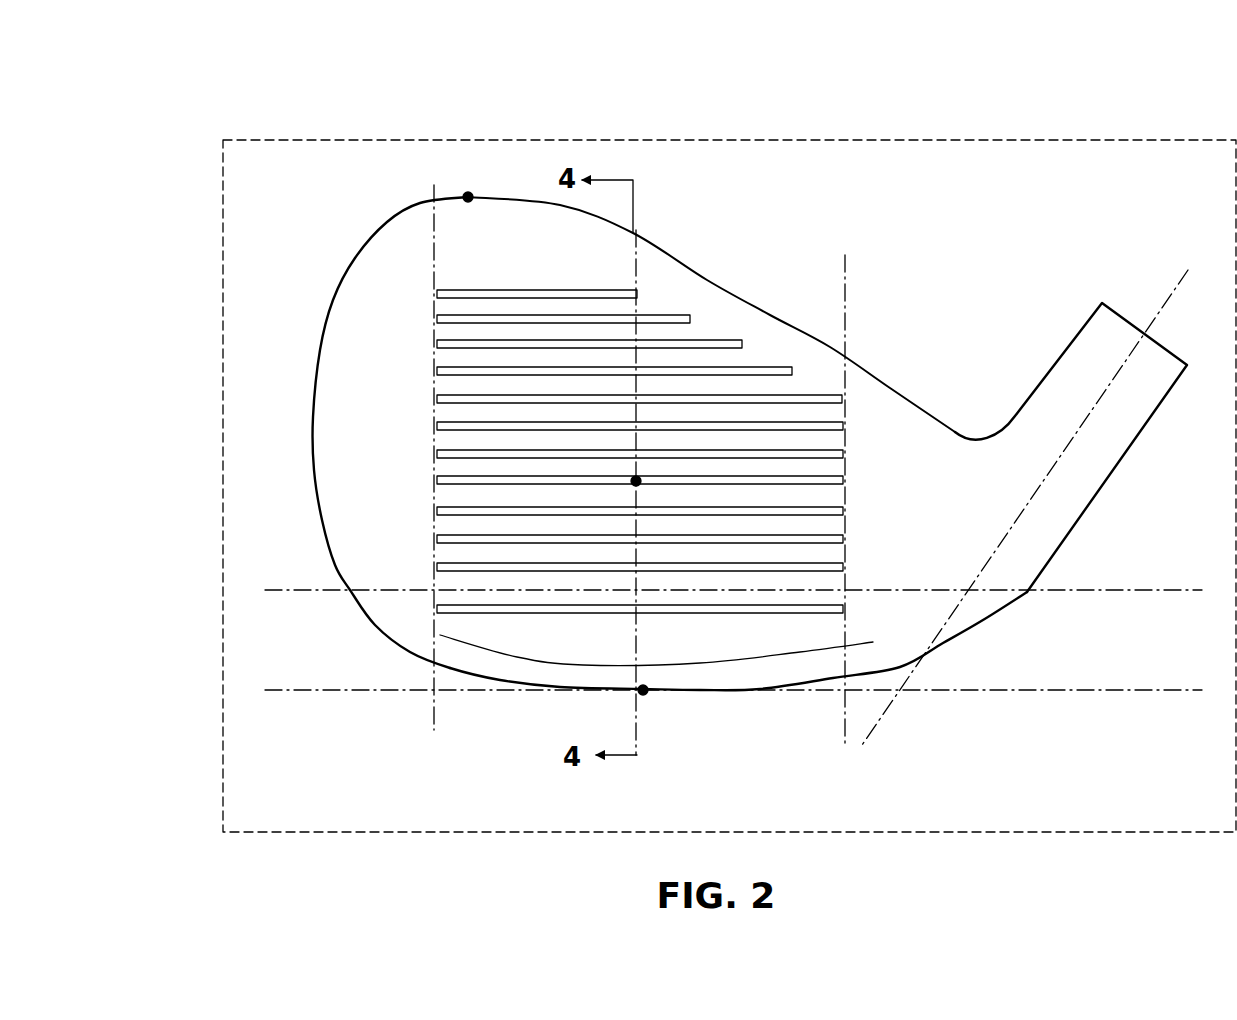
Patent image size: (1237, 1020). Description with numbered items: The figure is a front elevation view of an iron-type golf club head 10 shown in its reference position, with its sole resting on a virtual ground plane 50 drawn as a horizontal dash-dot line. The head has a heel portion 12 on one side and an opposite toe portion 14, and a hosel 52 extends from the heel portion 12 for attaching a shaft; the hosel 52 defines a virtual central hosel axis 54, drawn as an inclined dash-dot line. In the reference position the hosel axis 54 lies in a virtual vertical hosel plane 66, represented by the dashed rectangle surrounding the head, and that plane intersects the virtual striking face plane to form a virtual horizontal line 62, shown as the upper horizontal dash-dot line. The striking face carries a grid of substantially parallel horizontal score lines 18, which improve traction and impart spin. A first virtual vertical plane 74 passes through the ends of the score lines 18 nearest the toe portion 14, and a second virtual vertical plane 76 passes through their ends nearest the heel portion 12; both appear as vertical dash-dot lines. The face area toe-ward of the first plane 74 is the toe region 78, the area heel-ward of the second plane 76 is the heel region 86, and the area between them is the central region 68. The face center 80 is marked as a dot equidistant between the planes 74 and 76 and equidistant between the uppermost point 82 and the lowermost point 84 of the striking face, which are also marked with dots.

The golf club head 10 is at (470, 110).
The heel portion 12 is at (1046, 641).
The toe portion 14 is at (292, 408).
The score lines 18 is at (705, 342).
The virtual ground plane 50 is at (1093, 692).
The hosel 52 is at (1048, 353).
The hosel axis 54 is at (1152, 325).
The virtual horizontal line 62 is at (1132, 590).
The virtual vertical hosel plane 66 is at (966, 143).
The central region 68 is at (470, 233).
The first virtual vertical plane 74 is at (432, 245).
The second virtual vertical plane 76 is at (845, 280).
The toe region 78 is at (353, 340).
The face center 80 is at (636, 481).
The uppermost point 82 is at (468, 197).
The lowermost point 84 is at (643, 690).
The heel region 86 is at (908, 455).